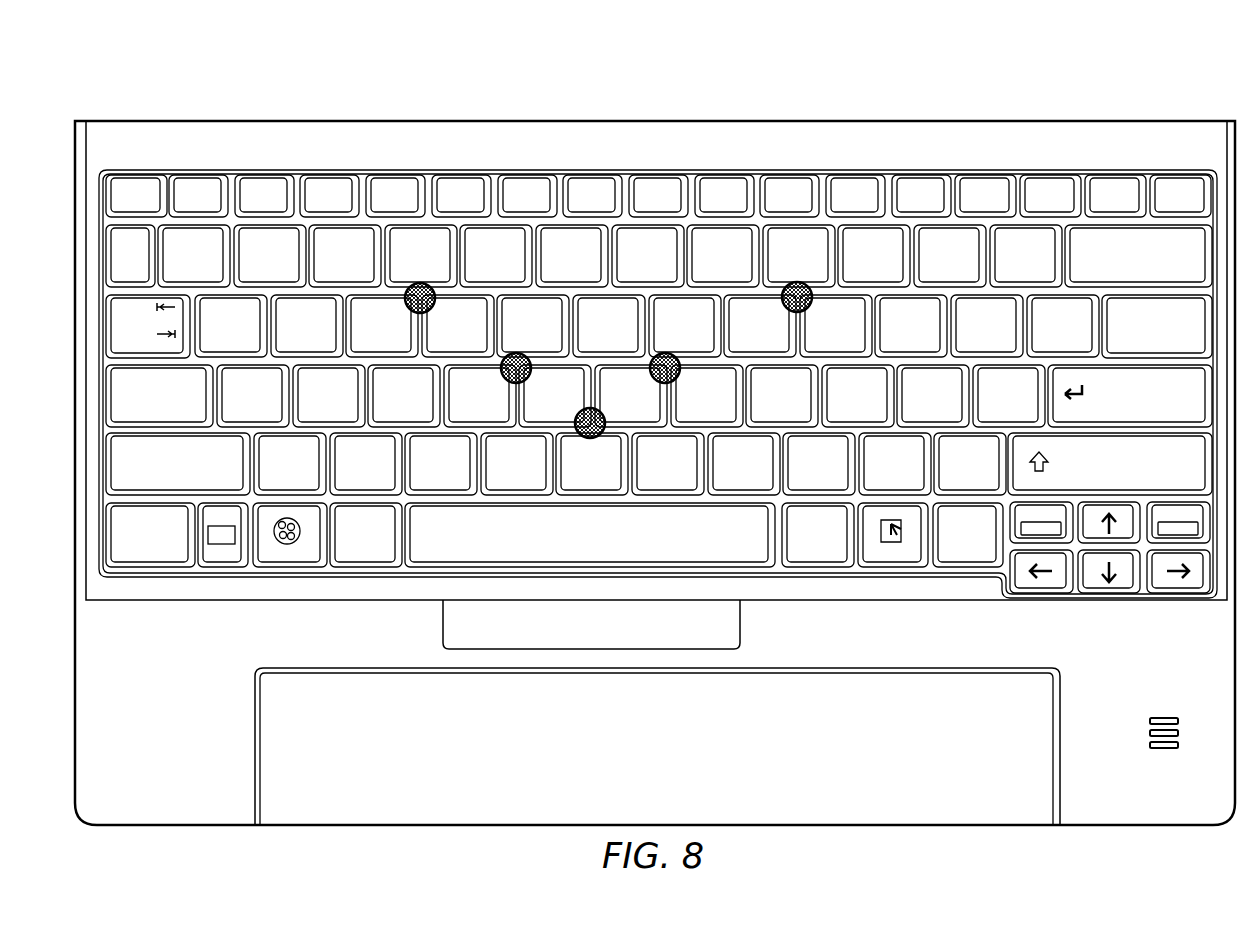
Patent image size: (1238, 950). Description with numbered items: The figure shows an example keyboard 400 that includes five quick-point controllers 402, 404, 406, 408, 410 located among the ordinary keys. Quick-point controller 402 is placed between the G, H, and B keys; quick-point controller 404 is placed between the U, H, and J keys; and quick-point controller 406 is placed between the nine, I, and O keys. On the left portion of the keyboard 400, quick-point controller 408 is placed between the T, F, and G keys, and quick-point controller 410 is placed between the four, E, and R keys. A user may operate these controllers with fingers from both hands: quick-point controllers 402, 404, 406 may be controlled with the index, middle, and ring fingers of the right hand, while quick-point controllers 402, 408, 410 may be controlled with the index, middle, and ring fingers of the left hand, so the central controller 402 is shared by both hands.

The keyboard 400 is at (655, 434).
The quick-point controller 402 is at (592, 438).
The quick-point controller 404 is at (667, 383).
The quick-point controller 406 is at (782, 300).
The quick-point controller 408 is at (516, 383).
The quick-point controller 410 is at (420, 283).